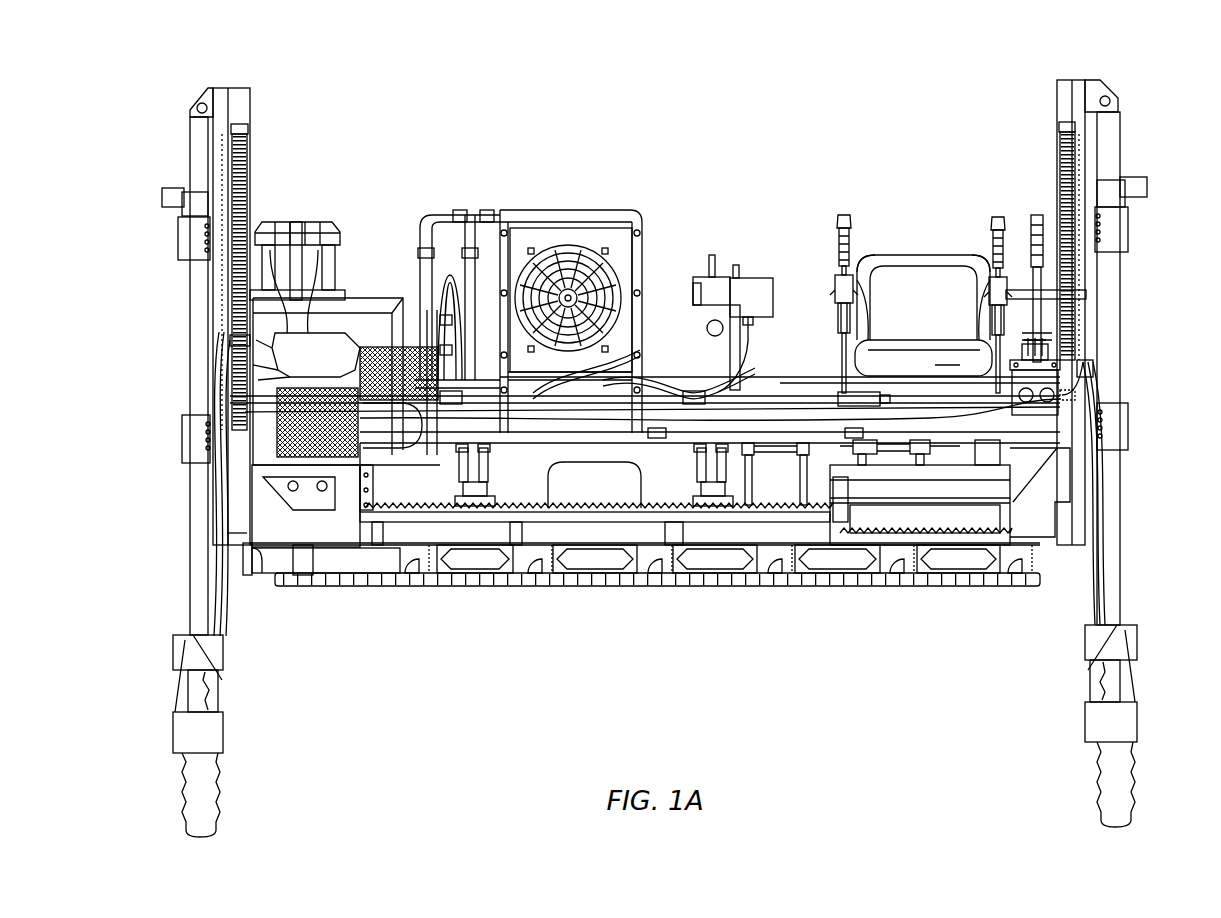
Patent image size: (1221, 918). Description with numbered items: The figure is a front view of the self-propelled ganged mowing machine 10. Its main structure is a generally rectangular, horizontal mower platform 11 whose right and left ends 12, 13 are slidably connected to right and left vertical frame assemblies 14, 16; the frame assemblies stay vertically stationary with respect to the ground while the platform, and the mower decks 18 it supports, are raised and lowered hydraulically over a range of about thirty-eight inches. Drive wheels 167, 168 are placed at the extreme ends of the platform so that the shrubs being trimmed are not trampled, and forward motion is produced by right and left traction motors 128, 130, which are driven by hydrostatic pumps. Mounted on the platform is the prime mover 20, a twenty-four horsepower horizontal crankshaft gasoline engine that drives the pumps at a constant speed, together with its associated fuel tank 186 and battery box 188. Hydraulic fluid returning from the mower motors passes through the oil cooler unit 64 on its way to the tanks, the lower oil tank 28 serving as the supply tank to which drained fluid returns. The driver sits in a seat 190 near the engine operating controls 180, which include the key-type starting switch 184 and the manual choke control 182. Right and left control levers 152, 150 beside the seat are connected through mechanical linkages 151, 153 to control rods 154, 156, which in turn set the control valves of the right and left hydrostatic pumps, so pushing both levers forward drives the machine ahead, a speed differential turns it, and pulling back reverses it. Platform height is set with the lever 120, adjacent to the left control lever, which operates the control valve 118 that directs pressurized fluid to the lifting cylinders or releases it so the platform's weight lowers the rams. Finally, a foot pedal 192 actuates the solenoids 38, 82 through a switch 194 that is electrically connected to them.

The ganged mowing machine 10 is at (898, 112).
The mower platform 11 is at (680, 125).
The right end of mower platform 12 is at (233, 88).
The left end of mower platform 13 is at (1088, 80).
The right vertical frame assembly 14 is at (170, 107).
The left vertical frame assembly 16 is at (1135, 101).
The mower decks 18 is at (370, 600).
The prime mover 20 is at (327, 350).
The lower oil tank 28 is at (303, 527).
The solenoid 38 is at (640, 347).
The solenoid 82 is at (679, 383).
The oil cooler unit 64 is at (575, 192).
The control valve 118 is at (1083, 377).
The lever 120 is at (1037, 215).
The right traction motor 128 is at (225, 658).
The left traction motor 130 is at (1085, 643).
The left control lever 150 is at (998, 217).
The mechanical linkage 151 is at (886, 257).
The right control lever 152 is at (843, 215).
The mechanical linkage 153 is at (962, 257).
The control rod 154 is at (795, 396).
The control rod 156 is at (823, 430).
The drive wheel 167 is at (1097, 773).
The drive wheel 168 is at (218, 782).
The control box 180 is at (712, 253).
The manual choke control 182 is at (736, 266).
The key-type starting switch 184 is at (695, 283).
The fuel tank 186 is at (570, 497).
The battery box 188 is at (318, 222).
The seat 190 is at (900, 311).
The foot pedal 192 is at (1023, 452).
The switch 194 is at (1058, 483).